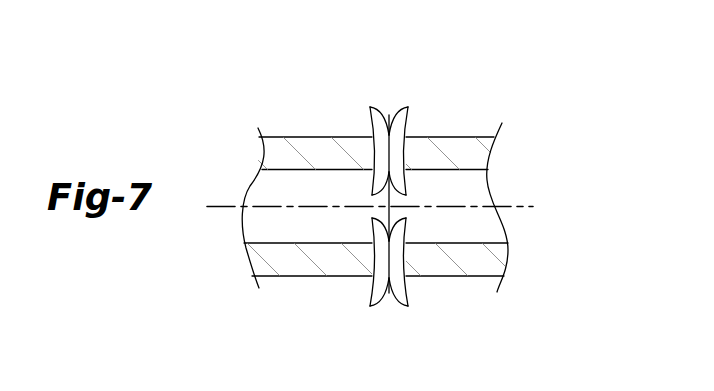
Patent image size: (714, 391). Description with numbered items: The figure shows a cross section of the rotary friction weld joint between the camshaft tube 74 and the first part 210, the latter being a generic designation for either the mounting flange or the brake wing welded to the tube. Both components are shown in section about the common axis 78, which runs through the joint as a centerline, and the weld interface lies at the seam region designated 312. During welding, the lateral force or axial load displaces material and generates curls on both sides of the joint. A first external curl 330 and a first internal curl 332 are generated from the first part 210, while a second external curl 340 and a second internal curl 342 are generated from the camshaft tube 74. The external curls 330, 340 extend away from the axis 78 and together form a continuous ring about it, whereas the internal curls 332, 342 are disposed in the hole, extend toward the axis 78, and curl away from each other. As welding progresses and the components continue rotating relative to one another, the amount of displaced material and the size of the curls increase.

The camshaft tube 74 is at (253, 182).
The axis 78 is at (518, 207).
The first part 210 is at (488, 181).
The joint seam 312 is at (347, 253).
The first external curl 330 is at (408, 113).
The first internal curl 332 is at (405, 195).
The second external curl 340 is at (370, 113).
The second internal curl 342 is at (372, 219).